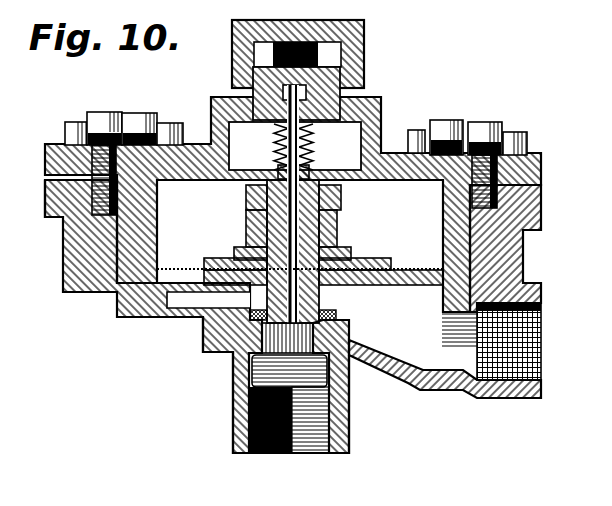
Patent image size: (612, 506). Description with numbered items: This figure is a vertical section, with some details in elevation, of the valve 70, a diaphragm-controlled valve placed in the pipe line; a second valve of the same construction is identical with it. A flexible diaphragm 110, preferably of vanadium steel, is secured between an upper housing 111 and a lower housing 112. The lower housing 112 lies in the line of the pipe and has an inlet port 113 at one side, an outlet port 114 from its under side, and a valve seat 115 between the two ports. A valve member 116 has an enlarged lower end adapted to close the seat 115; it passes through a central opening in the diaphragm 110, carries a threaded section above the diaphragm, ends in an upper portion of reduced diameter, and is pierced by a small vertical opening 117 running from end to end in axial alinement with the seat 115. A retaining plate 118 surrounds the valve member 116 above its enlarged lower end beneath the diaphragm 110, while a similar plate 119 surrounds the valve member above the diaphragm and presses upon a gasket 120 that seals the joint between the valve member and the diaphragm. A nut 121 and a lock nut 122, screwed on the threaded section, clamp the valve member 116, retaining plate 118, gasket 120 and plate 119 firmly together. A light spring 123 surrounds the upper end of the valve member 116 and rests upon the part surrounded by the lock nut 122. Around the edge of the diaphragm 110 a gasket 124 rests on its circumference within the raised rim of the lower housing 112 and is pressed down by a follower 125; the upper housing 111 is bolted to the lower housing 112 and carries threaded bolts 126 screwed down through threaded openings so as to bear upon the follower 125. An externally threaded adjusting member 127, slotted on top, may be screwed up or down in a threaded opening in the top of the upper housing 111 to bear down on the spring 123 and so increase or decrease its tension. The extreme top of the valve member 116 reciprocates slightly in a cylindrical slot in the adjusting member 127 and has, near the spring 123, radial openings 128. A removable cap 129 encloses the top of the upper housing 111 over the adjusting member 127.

The valve 70 is at (187, 92).
The flexible diaphragm 110 is at (430, 284).
The upper housing 111 is at (542, 164).
The lower housing 112 is at (520, 272).
The inlet port 113 is at (542, 330).
The outlet port 114 is at (307, 450).
The valve seat 115 is at (210, 333).
The valve member 116 is at (337, 303).
The vertical opening 117 is at (298, 242).
The retaining plate 118 is at (382, 276).
The plate 119 is at (368, 262).
The gasket 120 is at (245, 252).
The nut 121 is at (332, 217).
The lock nut 122 is at (248, 197).
The light spring 123 is at (309, 167).
The gasket 124 is at (105, 285).
The follower 125 is at (100, 220).
The threaded bolts 126 is at (90, 158).
The adjusting member 127 is at (336, 94).
The radial openings 128 is at (276, 141).
The removable cap 129 is at (243, 40).